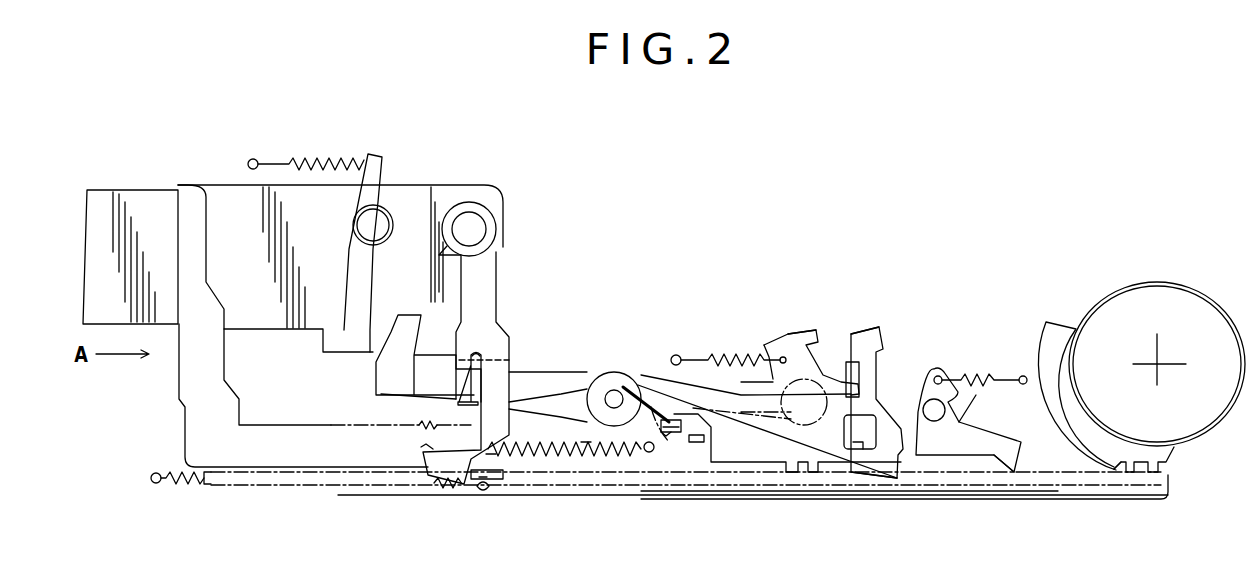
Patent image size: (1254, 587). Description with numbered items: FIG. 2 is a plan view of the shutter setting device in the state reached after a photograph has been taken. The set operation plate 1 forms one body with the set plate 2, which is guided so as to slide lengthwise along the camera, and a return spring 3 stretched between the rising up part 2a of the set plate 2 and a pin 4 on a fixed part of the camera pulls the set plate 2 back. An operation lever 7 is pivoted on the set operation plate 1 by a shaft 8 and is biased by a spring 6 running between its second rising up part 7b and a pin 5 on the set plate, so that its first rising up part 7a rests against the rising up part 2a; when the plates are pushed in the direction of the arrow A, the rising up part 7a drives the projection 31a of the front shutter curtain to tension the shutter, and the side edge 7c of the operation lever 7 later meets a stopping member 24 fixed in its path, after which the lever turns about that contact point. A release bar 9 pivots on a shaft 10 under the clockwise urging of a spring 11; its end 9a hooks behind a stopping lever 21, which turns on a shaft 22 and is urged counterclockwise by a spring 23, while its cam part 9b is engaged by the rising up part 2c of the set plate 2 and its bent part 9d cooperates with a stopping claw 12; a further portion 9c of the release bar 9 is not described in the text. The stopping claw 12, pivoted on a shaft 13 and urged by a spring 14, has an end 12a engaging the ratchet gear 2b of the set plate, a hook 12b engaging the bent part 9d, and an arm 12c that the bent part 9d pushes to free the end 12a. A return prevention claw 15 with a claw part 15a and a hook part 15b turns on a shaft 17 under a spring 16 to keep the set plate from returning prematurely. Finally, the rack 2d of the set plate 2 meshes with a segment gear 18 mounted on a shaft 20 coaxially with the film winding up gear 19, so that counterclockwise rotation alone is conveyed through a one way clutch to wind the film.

The set operation plate 1 is at (118, 205).
The set plate 2 is at (216, 470).
The rising up part of the set plate 2a is at (483, 486).
The ratchet gear 2b is at (563, 448).
The rising up part of the set plate 2c is at (695, 441).
The rack 2d is at (1072, 480).
The return spring 3 is at (268, 488).
The pin 4 is at (150, 473).
The pin 5 is at (644, 448).
The spring 6 is at (585, 445).
The operation lever 7 is at (498, 278).
The first rising up part 7a is at (440, 485).
The second rising up part 7b is at (420, 446).
The side edge of the operation lever 7c is at (500, 452).
The shaft 8 is at (482, 229).
The release bar 9 is at (563, 380).
The end of the release bar 9a is at (398, 315).
The cam part 9b is at (830, 464).
The lever window 9c is at (857, 448).
The bent part of the release bar 9d is at (852, 356).
The shaft 10 is at (612, 390).
The spring 11 is at (530, 392).
The stopping claw 12 is at (770, 350).
The end of the stopping claw 12a is at (668, 417).
The hook of the stopping claw 12b is at (787, 330).
The arm of the stopping claw 12c is at (862, 378).
The shaft 13 is at (803, 420).
The spring 14 is at (716, 357).
The return prevention claw 15 is at (950, 448).
The claw part 15a is at (1000, 470).
The hook part 15b is at (975, 393).
The spring 16 is at (985, 375).
The shaft 17 is at (945, 408).
The segment gear 18 is at (1080, 440).
The film winding up gear 19 is at (1182, 437).
The shaft 20 is at (1156, 362).
The stopping lever 21 is at (382, 168).
The shaft 22 is at (388, 220).
The spring 23 is at (300, 160).
The stopping member 24 is at (668, 433).
The projection of the front shutter curtain 31a is at (495, 478).